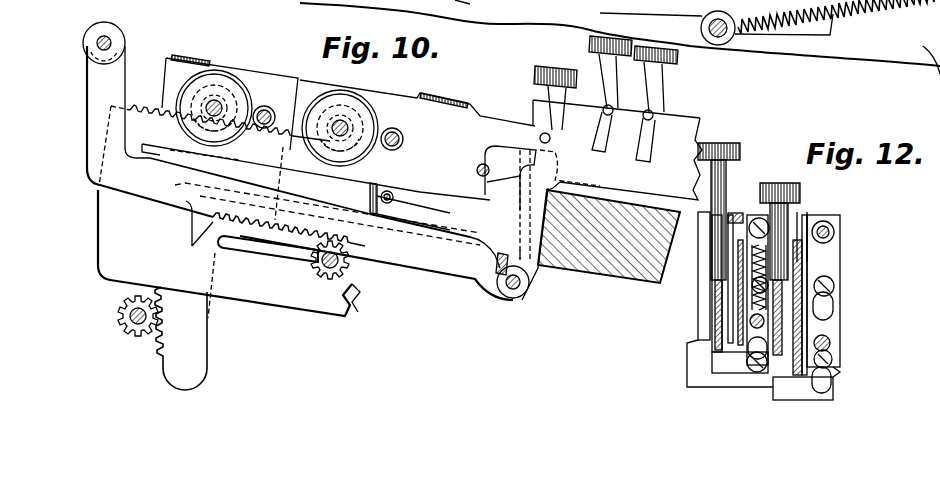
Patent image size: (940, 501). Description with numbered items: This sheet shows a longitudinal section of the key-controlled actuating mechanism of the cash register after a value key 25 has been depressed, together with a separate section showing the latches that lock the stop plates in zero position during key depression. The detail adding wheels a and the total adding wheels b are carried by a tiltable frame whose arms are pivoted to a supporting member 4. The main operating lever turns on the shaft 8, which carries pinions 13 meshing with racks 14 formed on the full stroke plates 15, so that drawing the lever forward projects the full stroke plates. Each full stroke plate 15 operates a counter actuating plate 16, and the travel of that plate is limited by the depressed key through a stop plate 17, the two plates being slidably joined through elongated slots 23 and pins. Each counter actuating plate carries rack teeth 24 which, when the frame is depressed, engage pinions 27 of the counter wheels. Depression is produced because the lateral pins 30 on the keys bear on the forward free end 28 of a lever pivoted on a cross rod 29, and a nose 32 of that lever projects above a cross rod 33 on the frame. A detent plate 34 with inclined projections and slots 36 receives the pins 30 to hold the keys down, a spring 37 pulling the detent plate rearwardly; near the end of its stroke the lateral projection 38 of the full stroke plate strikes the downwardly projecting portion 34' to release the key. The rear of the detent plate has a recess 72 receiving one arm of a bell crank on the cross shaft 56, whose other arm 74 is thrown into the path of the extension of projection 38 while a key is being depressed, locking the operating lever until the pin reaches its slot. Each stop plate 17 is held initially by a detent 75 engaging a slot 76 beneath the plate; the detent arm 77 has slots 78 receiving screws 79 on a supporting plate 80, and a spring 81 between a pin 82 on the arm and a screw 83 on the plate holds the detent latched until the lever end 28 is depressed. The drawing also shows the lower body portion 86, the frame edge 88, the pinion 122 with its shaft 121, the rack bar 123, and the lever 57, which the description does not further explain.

In FIG. 10, the supporting member 4 is at (577, 262).
In FIG. 12, the supporting member 4 is at (703, 245).
In FIG. 10, the shaft 8 is at (350, 282).
In FIG. 10, the pinions 13 is at (322, 272).
In FIG. 10, the racks 14 is at (213, 224).
In FIG. 10, the full stroke plate 15 is at (165, 219).
In FIG. 10, the counter actuating plate 16 is at (143, 132).
In FIG. 10, the stop plate 17 is at (468, 262).
In FIG. 12, the stop plate 17 is at (710, 315).
In FIG. 10, the elongated slots 23 is at (390, 193).
In FIG. 10, the rack teeth 24 is at (147, 115).
In FIG. 10, the value keys 25 is at (570, 43).
In FIG. 12, the value keys 25 is at (728, 182).
In FIG. 10, the pinions 27 is at (238, 74).
In FIG. 10, the forward free end of lever 28 is at (668, 167).
In FIG. 12, the forward free end of lever 28 is at (745, 252).
In FIG. 10, the cross rod 29 is at (113, 43).
In FIG. 10, the lateral pins 30 is at (646, 112).
In FIG. 12, the lateral pins 30 is at (736, 213).
In FIG. 10, the nose 32 is at (500, 147).
In FIG. 10, the cross rod 33 is at (477, 171).
In FIG. 10, the detent plate 34 is at (634, 159).
In FIG. 12, the detent plate 34 is at (750, 295).
In FIG. 10, the downwardly projecting portion 34' is at (472, 187).
In FIG. 10, the slots or recesses 36 is at (648, 151).
In FIG. 10, the spring 37 is at (862, 12).
In FIG. 10, the lateral projection 38 is at (383, 207).
In FIG. 10, the cross shaft 56 is at (518, 292).
In FIG. 10, the frame 57 is at (476, 6).
In FIG. 10, the recess or slot 72 is at (570, 168).
In FIG. 10, the arm 74 is at (470, 290).
In FIG. 10, the detent 75 is at (505, 298).
In FIG. 12, the detent 75 is at (733, 372).
In FIG. 10, the slot 76 is at (530, 263).
In FIG. 12, the slot 76 is at (720, 350).
In FIG. 12, the arm 77 is at (830, 298).
In FIG. 12, the slots 78 is at (833, 310).
In FIG. 12, the screws 79 is at (835, 285).
In FIG. 12, the supporting plate 80 is at (833, 252).
In FIG. 12, the spring 81 is at (743, 340).
In FIG. 12, the pin 82 is at (833, 342).
In FIG. 12, the screw 83 is at (842, 225).
In FIG. 10, the body 86 is at (253, 288).
In FIG. 10, the frame 88 is at (620, 37).
In FIG. 10, the pinion shaft 121 is at (125, 320).
In FIG. 10, the pinion 122 is at (118, 303).
In FIG. 10, the rack bar 123 is at (195, 352).
In FIG. 10, the adding wheels a is at (373, 102).
In FIG. 10, the adding wheels b is at (243, 85).